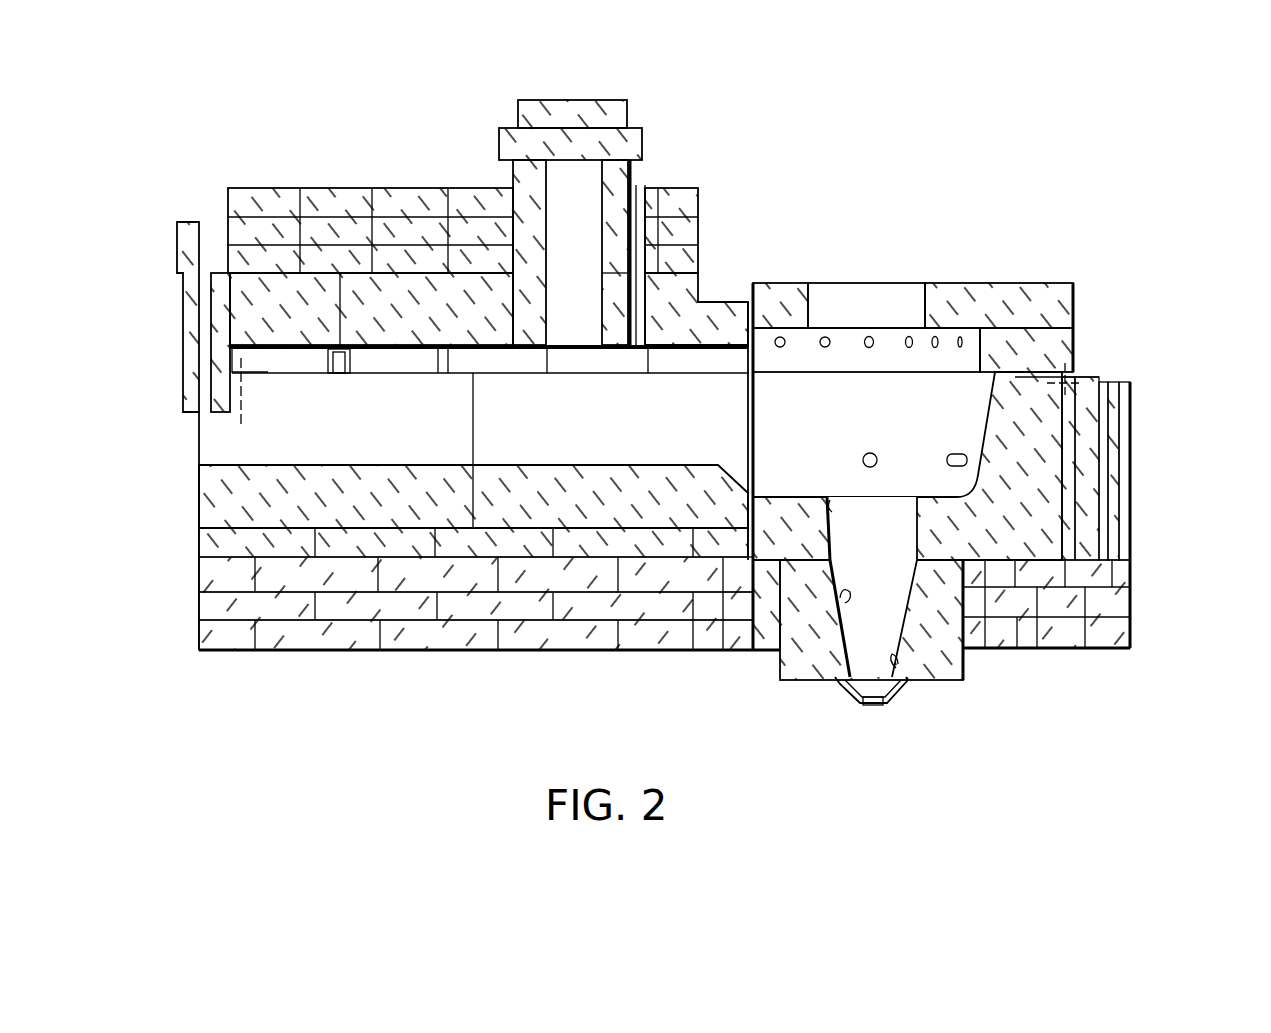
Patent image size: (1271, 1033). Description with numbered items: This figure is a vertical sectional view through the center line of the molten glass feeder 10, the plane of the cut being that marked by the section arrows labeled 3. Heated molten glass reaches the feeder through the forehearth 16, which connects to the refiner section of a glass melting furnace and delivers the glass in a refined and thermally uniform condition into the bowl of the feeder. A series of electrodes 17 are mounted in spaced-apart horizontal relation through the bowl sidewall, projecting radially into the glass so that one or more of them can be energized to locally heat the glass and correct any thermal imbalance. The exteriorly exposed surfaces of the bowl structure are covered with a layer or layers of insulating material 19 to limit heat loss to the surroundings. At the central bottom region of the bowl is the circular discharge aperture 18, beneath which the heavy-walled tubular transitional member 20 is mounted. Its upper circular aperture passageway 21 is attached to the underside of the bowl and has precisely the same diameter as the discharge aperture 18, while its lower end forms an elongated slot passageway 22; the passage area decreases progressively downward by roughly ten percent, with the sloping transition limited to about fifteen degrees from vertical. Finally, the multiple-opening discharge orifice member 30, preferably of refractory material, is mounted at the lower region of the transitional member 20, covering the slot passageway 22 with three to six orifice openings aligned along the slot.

The molten glass feeder 10 is at (1090, 295).
The forehearth 16 is at (199, 500).
The electrodes 17 is at (950, 455).
The discharge aperture 18 is at (835, 513).
The insulating material 19 is at (1088, 503).
The transitional member 20 is at (963, 672).
The circular aperture passageway 21 is at (845, 600).
The elongated slot passageway 22 is at (900, 678).
The multiple-opening discharge orifice member 30 is at (855, 704).
The section line 3- 3 is at (182, 412).